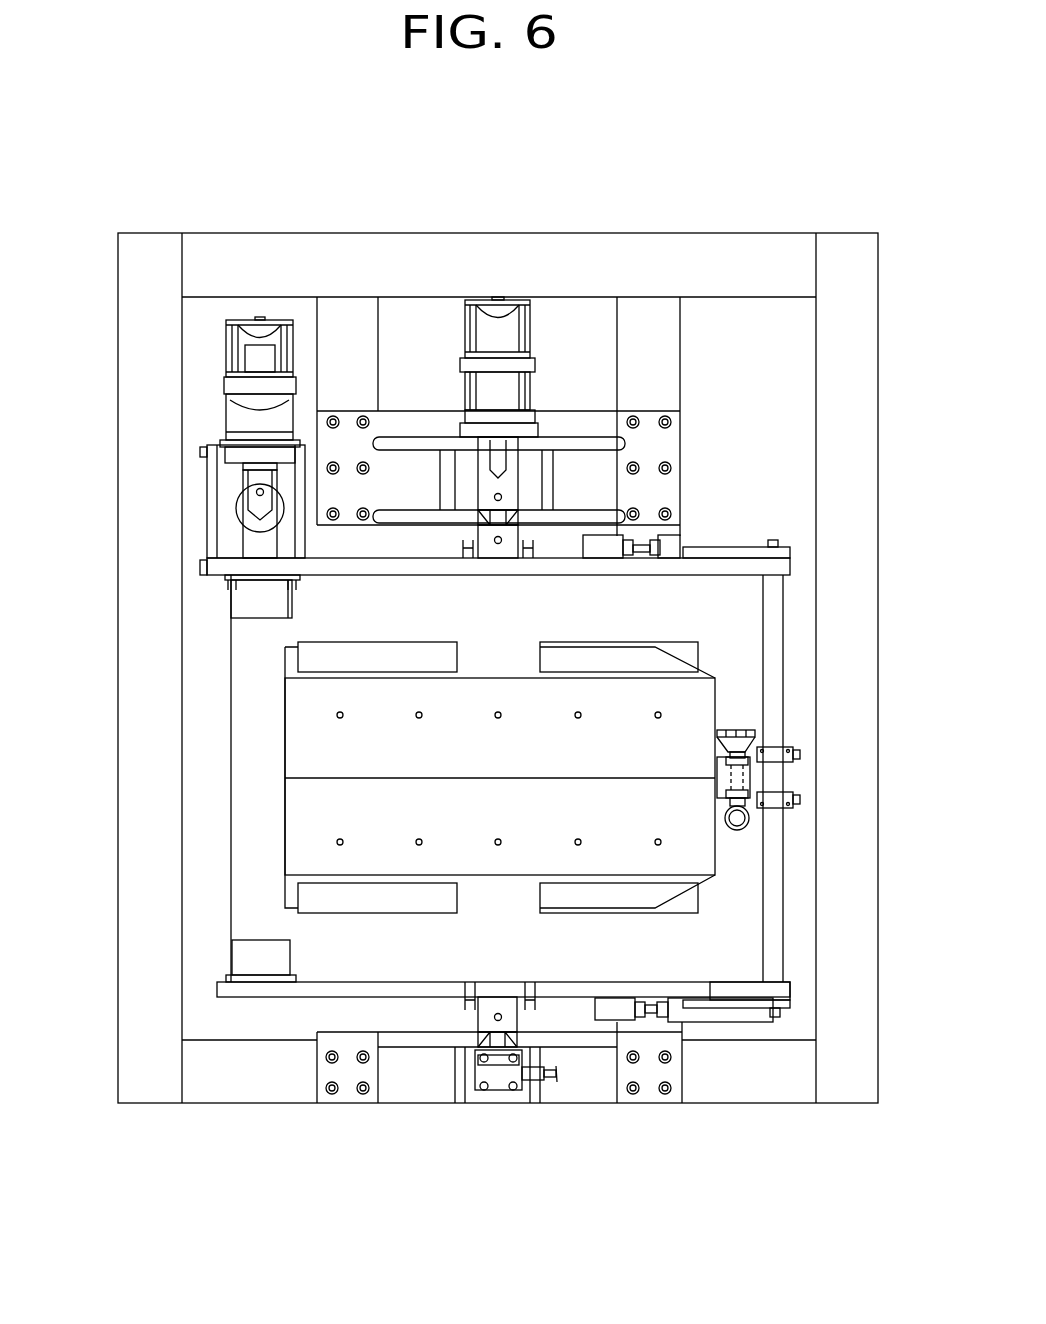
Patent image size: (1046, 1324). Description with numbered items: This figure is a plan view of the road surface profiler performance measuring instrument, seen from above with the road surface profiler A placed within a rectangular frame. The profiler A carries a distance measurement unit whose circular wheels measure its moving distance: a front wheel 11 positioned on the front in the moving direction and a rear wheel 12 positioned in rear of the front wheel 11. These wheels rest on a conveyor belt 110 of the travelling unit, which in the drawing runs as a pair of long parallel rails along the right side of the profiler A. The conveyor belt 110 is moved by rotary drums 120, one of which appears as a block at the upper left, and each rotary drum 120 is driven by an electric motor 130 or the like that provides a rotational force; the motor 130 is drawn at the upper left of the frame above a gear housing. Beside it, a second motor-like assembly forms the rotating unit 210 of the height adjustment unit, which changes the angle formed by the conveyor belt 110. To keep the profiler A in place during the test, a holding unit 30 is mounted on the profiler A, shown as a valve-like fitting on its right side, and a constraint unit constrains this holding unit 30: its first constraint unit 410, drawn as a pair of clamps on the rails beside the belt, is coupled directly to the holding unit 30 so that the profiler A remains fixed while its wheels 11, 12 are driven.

The electric motor 130 is at (258, 333).
The rotating unit 210 is at (497, 335).
The rotary drum 120 is at (250, 600).
The conveyor belt 110 is at (738, 638).
The road surface profiler A is at (610, 706).
The holding unit 30 is at (738, 740).
The first constraint unit 410 is at (775, 750).
The rear wheel 12 is at (355, 898).
The front wheel 11 is at (590, 898).